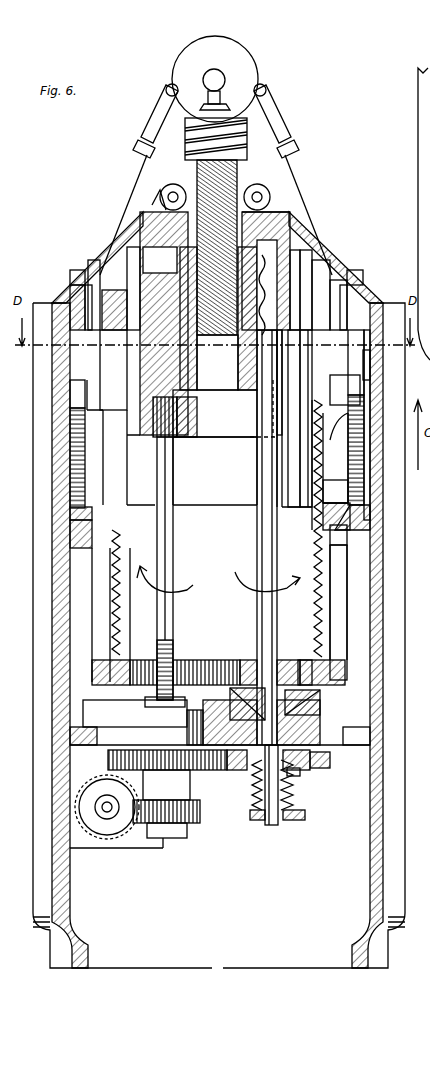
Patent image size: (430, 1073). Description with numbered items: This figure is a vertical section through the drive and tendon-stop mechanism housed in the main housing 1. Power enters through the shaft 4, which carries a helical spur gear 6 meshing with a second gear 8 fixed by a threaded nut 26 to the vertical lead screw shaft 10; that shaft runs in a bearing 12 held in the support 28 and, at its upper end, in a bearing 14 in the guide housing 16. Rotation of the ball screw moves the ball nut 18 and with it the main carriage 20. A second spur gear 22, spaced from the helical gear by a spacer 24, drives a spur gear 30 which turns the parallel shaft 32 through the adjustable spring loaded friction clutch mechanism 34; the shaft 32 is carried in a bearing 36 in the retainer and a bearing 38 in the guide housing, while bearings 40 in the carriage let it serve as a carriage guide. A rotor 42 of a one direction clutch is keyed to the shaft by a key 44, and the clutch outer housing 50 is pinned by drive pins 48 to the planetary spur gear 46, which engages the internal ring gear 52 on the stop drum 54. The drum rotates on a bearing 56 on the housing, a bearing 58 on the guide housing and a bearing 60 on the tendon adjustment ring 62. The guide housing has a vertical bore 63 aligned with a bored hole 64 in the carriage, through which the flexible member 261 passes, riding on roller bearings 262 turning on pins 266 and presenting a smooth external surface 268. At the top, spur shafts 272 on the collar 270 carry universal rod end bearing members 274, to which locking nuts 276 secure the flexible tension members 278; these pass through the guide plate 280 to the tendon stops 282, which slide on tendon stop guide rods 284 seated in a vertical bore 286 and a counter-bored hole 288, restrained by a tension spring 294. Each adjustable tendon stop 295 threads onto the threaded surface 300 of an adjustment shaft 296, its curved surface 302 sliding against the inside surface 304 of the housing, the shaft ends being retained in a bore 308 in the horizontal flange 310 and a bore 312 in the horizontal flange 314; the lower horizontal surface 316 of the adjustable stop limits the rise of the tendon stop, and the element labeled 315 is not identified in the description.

The main housing 1 is at (370, 855).
The shaft 4 is at (98, 815).
The helical spur gear 6 is at (120, 825).
The second gear 8 is at (200, 808).
The lead screw shaft 10 is at (174, 633).
The bearing 12 is at (190, 728).
The bearing 14 is at (148, 700).
The guide housing 16 is at (160, 210).
The ball nut 18 is at (160, 425).
The main carriage 20 is at (184, 430).
The second spur gear 22 is at (203, 770).
The spacer 24 is at (166, 785).
The threaded nut 26 is at (168, 838).
The support 28 is at (343, 722).
The spur gear 30 is at (330, 760).
The shaft 32 is at (262, 533).
The friction clutch mechanism 34 is at (279, 818).
The bearing 36 is at (308, 770).
The bearing 38 is at (325, 248).
The bearings 40 is at (264, 300).
The rotor 42 is at (306, 710).
The key 44 is at (245, 678).
The planetary spur gear 46 is at (297, 656).
The drive pins 48 is at (300, 656).
The outer housing 50 is at (233, 693).
The internal ring gear 52 is at (222, 660).
The stop drum 54 is at (338, 592).
The bearing 56 is at (338, 505).
The bearing 58 is at (133, 295).
The bearing 60 is at (100, 285).
The tendon adjustment ring 62 is at (72, 300).
The vertical bore 63 is at (265, 238).
The bored hole 64 is at (220, 420).
The flexible member 261 is at (243, 142).
The roller bearings 262 is at (275, 176).
The pins 266 is at (173, 195).
The external surface 268 is at (217, 342).
The collar 270 is at (226, 56).
The spur shafts 272 is at (185, 56).
The universal rod end bearing members 274 is at (150, 121).
The locking nuts 276 is at (137, 141).
The flexible tension members 278 is at (137, 164).
The guide plate 280 is at (115, 275).
The tendon stops 282 is at (118, 432).
The tendon stop guide rods 284 is at (316, 474).
The vertical bore 286 is at (85, 300).
The counter-bored hole 288 is at (128, 290).
The tension spring 294 is at (316, 493).
The adjustable tendon stop 295 is at (353, 392).
The tendon stop adjustment shafts 296 is at (82, 422).
The threaded surface 300 is at (366, 493).
The surface 302 is at (383, 360).
The inside surface 304 is at (355, 515).
The bore 308 is at (88, 518).
The horizontal flange 310 is at (110, 545).
The bore 312 is at (347, 285).
The horizontal flange 314 is at (340, 530).
The spring 315 is at (323, 410).
The lower horizontal surface 316 is at (339, 440).